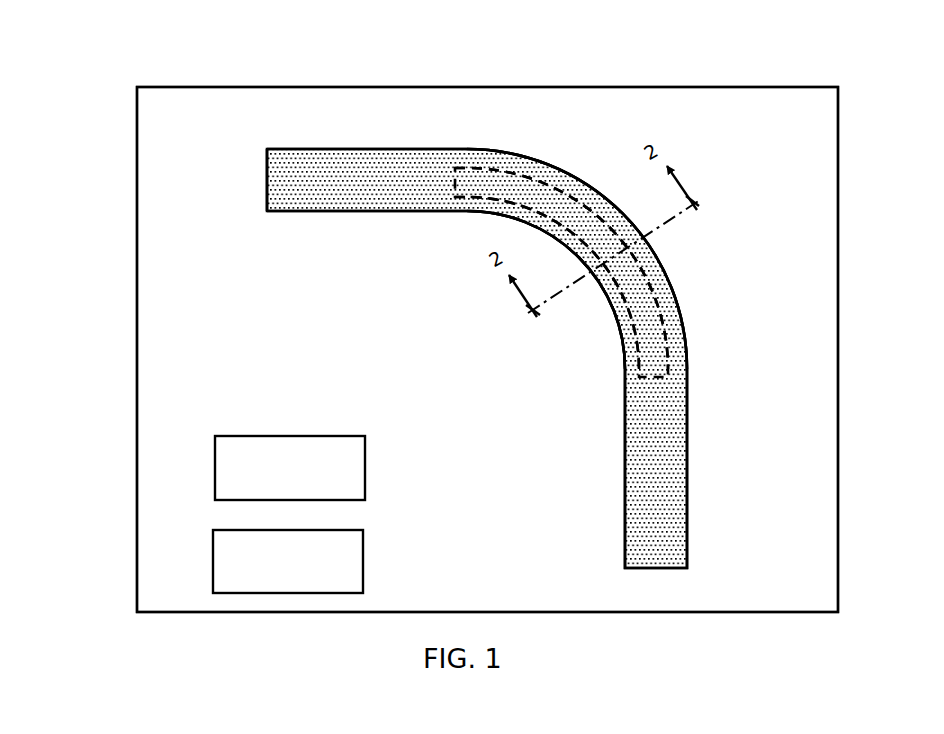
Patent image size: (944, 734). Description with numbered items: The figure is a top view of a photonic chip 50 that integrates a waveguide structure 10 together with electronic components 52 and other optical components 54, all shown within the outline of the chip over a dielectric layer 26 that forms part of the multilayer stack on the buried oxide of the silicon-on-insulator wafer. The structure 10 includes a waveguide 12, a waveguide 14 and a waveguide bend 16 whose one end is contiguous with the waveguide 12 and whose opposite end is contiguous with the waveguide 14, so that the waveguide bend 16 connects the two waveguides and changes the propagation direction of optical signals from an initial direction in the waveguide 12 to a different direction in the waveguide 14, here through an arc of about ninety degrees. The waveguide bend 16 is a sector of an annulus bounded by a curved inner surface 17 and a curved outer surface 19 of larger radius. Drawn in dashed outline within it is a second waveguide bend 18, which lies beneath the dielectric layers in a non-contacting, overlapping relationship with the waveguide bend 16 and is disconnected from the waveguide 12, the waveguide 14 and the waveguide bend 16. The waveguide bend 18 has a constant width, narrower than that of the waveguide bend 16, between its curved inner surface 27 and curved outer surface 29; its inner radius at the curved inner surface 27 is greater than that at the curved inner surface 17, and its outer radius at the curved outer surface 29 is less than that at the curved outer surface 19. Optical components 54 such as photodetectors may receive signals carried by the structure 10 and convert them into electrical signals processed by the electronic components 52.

The photonic chip 50 is at (134, 62).
The structure 10 is at (720, 186).
The waveguide 12 is at (300, 198).
The waveguide 14 is at (655, 498).
The waveguide bend 16 is at (650, 265).
The curved inner surface 17 is at (493, 218).
The curved outer surface 19 is at (565, 176).
The waveguide bend 18 is at (664, 309).
The curved inner surface 27 is at (630, 317).
The curved outer surface 29 is at (598, 206).
The dielectric layer 26 is at (178, 600).
The electronic components 52 is at (365, 466).
The optical components 54 is at (363, 563).